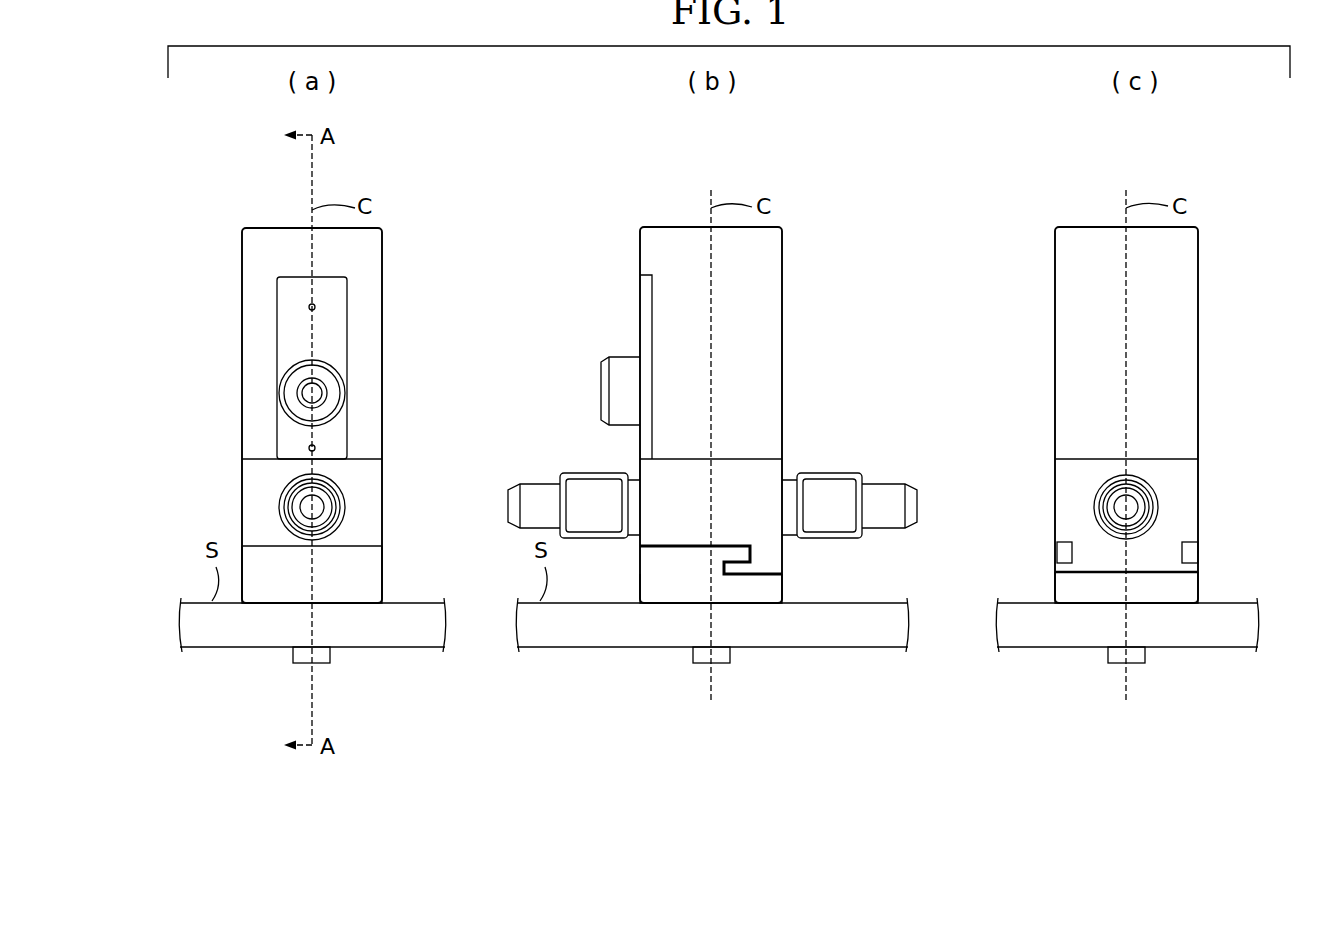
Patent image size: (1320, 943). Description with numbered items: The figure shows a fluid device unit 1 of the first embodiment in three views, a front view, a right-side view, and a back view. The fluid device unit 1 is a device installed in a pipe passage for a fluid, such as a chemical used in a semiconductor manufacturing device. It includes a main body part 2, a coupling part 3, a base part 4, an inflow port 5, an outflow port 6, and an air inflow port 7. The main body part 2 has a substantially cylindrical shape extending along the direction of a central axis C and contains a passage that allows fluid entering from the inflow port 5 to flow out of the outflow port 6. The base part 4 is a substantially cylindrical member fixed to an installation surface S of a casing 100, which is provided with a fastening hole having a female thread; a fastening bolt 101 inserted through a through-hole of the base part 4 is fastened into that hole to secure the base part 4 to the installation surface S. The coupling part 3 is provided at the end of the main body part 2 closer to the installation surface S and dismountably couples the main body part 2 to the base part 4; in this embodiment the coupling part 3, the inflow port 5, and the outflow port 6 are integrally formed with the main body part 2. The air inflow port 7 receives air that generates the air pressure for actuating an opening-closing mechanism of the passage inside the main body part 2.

The fluid device unit 1 is at (386, 178).
The main body part 2 is at (396, 455).
The coupling part 3 is at (800, 560).
The base part 4 is at (375, 567).
The inflow port 5 is at (333, 497).
The outflow port 6 is at (1155, 495).
The air inflow port 7 is at (325, 392).
The casing 100 is at (410, 630).
The fastening bolt 101 is at (318, 662).